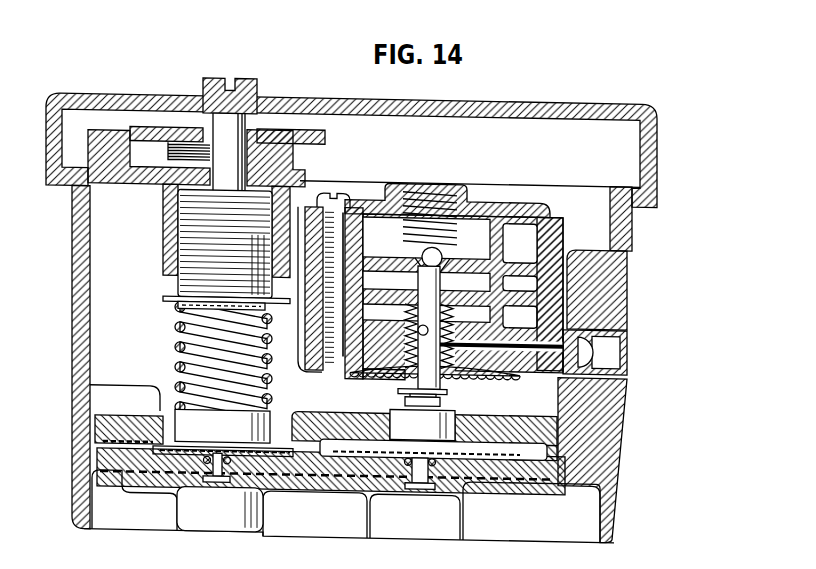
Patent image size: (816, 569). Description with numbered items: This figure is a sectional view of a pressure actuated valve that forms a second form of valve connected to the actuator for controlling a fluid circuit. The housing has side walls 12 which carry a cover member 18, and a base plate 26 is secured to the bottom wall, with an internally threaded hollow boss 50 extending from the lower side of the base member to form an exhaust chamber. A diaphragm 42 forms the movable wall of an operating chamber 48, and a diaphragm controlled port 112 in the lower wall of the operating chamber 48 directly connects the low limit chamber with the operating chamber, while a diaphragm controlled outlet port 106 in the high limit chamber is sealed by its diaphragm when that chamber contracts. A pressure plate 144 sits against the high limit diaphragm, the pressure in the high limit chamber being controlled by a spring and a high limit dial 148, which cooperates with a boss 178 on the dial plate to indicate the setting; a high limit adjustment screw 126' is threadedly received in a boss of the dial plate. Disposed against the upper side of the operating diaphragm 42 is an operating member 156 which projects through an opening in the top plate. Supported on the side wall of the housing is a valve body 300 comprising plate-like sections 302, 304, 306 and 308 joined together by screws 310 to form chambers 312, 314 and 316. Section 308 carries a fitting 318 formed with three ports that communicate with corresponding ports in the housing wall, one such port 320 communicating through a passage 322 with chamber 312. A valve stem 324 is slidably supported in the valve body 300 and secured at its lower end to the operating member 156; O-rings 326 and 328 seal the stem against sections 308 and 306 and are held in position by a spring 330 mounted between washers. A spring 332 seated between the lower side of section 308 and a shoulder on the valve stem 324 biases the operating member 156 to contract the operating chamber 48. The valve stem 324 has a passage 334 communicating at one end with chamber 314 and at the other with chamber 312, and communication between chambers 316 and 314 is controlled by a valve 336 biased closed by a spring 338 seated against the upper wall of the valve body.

The cover member 18 is at (119, 92).
The boss 178 is at (120, 138).
The high limit dial 148 is at (325, 127).
The side walls 12 is at (75, 220).
The high limit adjustment screw 126' is at (201, 187).
The screws 310 is at (341, 190).
The spring 338 is at (431, 210).
The valve body 300 is at (506, 193).
The plate-like section 302 is at (547, 210).
The chamber 316 is at (366, 239).
The valve 336 is at (441, 247).
The chamber 314 is at (372, 281).
The O-ring 328 is at (444, 274).
The chamber 312 is at (373, 314).
The passage 334 is at (448, 304).
The plate-like section 304 is at (548, 252).
The plate-like section 306 is at (548, 281).
The spring 330 is at (266, 340).
The plate-like section 308 is at (303, 357).
The O-ring 326 is at (387, 373).
The passage 322 is at (497, 361).
The valve stem 324 is at (452, 382).
The spring 332 is at (507, 341).
The port 320 is at (570, 359).
The fitting 318 is at (563, 392).
The diaphragm 42 is at (335, 407).
The pressure plate 144 is at (193, 430).
The operating member 156 is at (399, 426).
The outlet port 106 is at (203, 456).
The hollow boss 50 is at (246, 503).
The base plate 26 is at (306, 496).
The port 112 is at (415, 481).
The operating chamber 48 is at (540, 470).